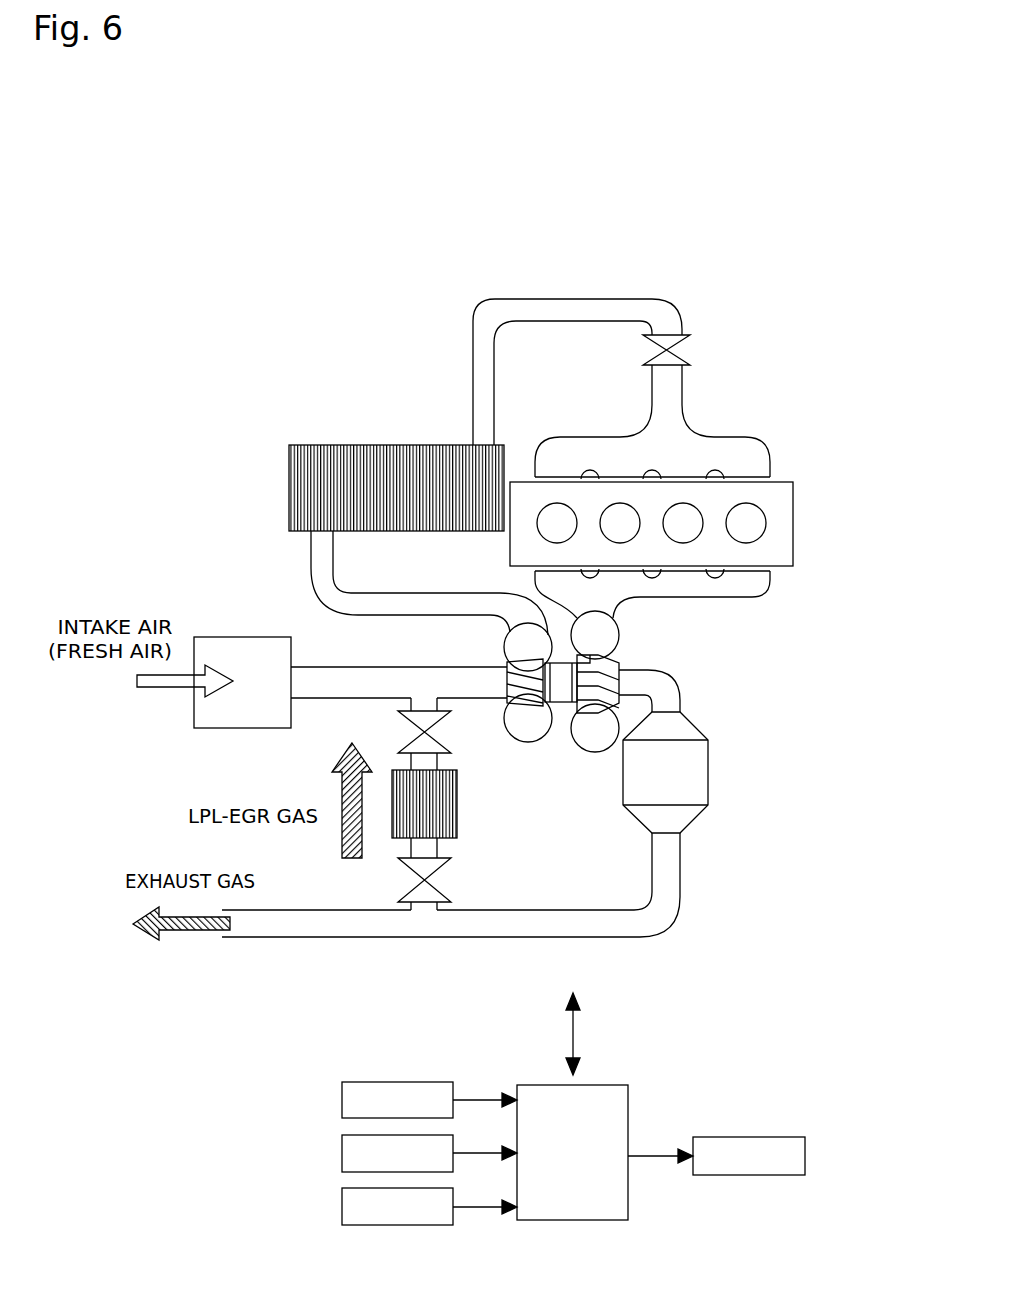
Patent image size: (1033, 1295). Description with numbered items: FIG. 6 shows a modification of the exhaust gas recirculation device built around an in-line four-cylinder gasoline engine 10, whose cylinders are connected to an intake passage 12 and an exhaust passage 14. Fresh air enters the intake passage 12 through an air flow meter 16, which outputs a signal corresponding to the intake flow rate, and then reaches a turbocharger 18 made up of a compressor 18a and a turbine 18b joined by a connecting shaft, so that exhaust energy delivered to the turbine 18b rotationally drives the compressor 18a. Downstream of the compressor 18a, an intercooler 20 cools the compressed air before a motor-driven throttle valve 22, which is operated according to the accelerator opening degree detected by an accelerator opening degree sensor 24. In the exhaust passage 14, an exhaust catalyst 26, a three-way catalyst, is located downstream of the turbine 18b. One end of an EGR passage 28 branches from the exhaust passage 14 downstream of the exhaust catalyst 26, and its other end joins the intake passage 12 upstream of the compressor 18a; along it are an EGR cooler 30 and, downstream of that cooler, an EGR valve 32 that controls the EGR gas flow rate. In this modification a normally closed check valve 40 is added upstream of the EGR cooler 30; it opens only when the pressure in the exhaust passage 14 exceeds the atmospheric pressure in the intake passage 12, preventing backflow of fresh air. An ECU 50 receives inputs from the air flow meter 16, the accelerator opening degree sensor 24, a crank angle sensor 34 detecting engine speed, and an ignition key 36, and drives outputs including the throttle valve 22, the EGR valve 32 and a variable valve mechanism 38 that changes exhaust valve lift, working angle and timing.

The engine 10 is at (747, 615).
The intake passage 12 is at (572, 299).
The exhaust passage 14 is at (680, 672).
The air flow meter 16 is at (243, 728).
The turbocharger 18 is at (558, 733).
The compressor 18a is at (528, 742).
The turbine 18b is at (594, 710).
The intercooler 20 is at (402, 445).
The throttle valve 22 is at (690, 345).
The accelerator opening degree sensor 24 is at (340, 1108).
The exhaust catalyst 26 is at (708, 773).
The EGR passage 28 is at (411, 848).
The EGR cooler 30 is at (457, 805).
The EGR valve 32 is at (451, 742).
The crank angle sensor 34 is at (340, 1161).
The ignition key 36 is at (340, 1215).
The variable valve mechanism 38 is at (770, 1137).
The check valve 40 is at (451, 886).
The ECU 50 is at (610, 1085).